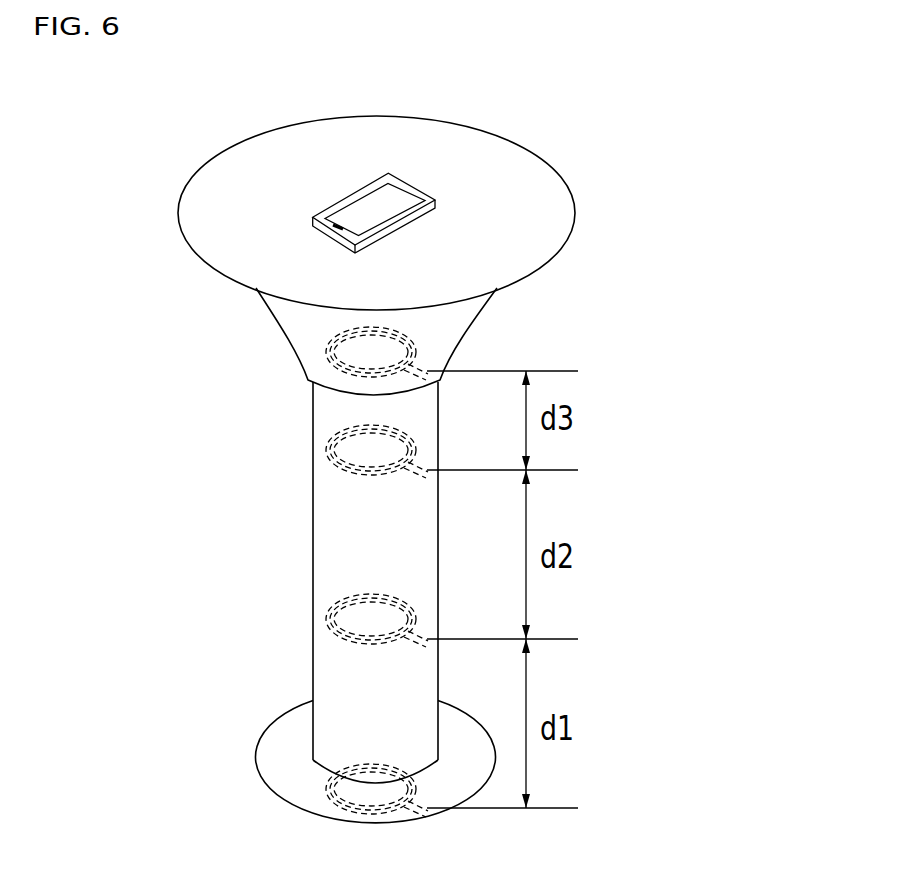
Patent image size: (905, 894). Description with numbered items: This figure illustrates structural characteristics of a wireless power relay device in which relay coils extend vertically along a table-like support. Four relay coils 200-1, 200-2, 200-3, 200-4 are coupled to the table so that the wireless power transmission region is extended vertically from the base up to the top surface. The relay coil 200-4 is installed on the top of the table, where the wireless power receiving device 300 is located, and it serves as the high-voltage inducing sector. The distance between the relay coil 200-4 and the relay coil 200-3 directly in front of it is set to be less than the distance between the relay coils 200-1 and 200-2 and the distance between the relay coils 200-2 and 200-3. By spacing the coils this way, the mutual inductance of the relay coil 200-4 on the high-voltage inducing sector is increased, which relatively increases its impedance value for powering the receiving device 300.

The wireless power receiving device 300 is at (413, 183).
The relay coil 200-1 is at (327, 787).
The relay coil 200-2 is at (327, 613).
The relay coil 200-3 is at (327, 448).
The relay coil 200-4 is at (327, 348).